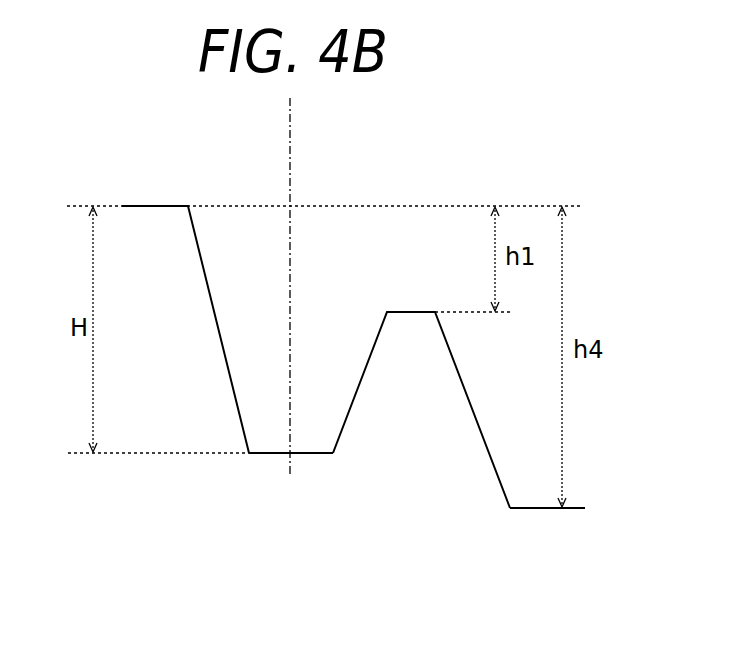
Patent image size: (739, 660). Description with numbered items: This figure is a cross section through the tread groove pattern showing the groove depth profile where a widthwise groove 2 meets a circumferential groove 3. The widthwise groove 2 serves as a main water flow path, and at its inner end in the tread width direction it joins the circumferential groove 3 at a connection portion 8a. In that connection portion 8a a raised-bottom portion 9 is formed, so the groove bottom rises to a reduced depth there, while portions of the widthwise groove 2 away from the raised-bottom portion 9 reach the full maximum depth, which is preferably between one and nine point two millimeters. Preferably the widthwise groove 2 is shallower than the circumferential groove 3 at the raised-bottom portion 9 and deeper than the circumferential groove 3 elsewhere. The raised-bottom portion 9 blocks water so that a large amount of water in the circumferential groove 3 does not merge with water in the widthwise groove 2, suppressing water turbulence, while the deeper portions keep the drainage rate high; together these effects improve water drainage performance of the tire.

The widthwise groove 2 is at (366, 368).
The circumferential groove 3 is at (270, 438).
The connection portion 8a is at (388, 277).
The raised-bottom portion 9 is at (421, 378).